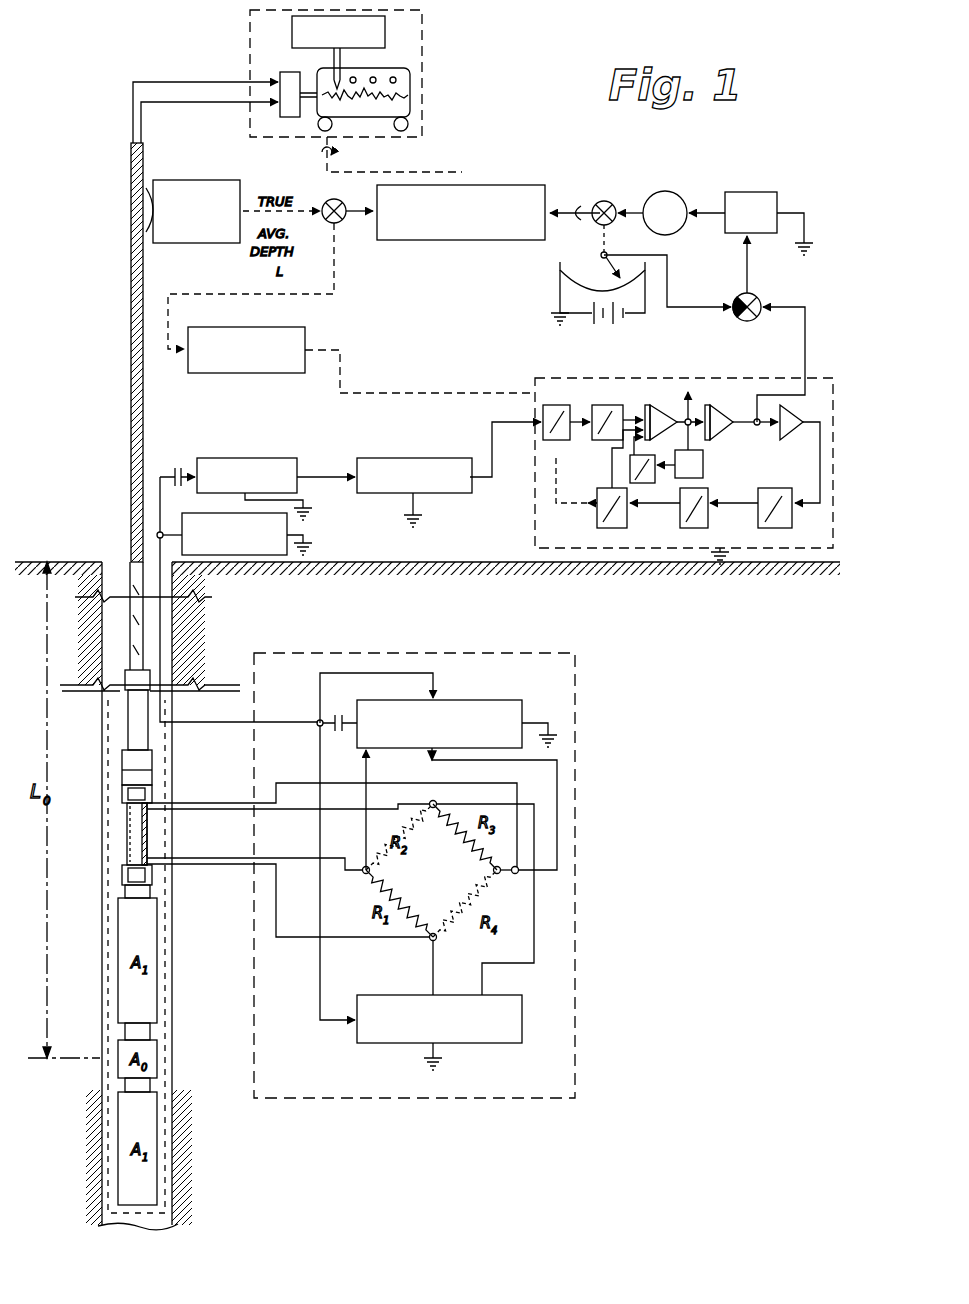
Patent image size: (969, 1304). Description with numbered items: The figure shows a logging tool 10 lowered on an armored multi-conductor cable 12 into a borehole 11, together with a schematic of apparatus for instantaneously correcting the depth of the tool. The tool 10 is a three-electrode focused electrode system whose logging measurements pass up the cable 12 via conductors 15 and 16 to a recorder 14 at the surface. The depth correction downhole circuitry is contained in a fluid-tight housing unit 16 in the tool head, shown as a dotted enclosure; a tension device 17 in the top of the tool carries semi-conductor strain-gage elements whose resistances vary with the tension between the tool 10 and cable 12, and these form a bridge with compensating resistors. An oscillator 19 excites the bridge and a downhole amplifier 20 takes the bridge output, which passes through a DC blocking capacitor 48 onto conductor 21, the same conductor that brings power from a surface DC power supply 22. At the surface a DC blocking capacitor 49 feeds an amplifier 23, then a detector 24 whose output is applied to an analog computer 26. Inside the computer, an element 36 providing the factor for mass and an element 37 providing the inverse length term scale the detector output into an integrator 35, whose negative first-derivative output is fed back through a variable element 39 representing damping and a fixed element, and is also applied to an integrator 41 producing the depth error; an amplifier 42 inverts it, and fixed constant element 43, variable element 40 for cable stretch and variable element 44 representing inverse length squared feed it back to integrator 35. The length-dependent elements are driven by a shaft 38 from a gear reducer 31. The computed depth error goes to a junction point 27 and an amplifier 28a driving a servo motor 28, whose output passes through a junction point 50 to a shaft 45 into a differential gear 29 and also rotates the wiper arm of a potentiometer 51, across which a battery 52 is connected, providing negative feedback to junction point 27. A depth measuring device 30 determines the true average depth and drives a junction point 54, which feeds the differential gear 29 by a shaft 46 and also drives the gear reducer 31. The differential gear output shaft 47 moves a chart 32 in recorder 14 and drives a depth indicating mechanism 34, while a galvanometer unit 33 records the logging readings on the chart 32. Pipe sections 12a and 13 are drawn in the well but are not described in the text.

The tool 10 is at (90, 1022).
The borehole 11 is at (102, 633).
The armored multi-conductor cable 12 is at (131, 463).
The lower pipe section 12a is at (127, 735).
The pipe string 13 is at (150, 657).
The recorder 14 is at (422, 52).
The conductor 15 is at (155, 106).
The fluid-tight housing unit 16 is at (162, 80).
The tension device 17 is at (104, 814).
The oscillator 19 is at (478, 1043).
The downhole amplifier 20 is at (462, 700).
The conductor 21 is at (165, 634).
The DC power supply 22 is at (215, 513).
The amplifier 23 is at (240, 458).
The detector 24 is at (414, 458).
The analog computer 26 is at (535, 505).
The junction point 27 is at (738, 316).
The servo motor 28 is at (670, 190).
The amplifier 28a is at (750, 192).
The differential gear 29 is at (460, 242).
The depth measuring device 30 is at (192, 180).
The gear reducer 31 is at (237, 327).
The chart 32 is at (410, 103).
The galvanometer unit 33 is at (280, 74).
The depth indicating mechanism 34 is at (385, 33).
The integrator 35 is at (654, 405).
The element 36 is at (609, 405).
The element 37 is at (556, 404).
The shaft 38 is at (556, 465).
The variable element 39 is at (703, 465).
The variable element 40 is at (680, 528).
The integrator 41 is at (716, 405).
The amplifier 42 is at (800, 412).
The fixed constant element 43 is at (758, 528).
The variable element 44 is at (597, 528).
The shaft 45 is at (574, 204).
The shaft 46 is at (351, 222).
The shaft 47 is at (462, 172).
The DC blocking capacitor 48 is at (338, 712).
The DC blocking capacitor 49 is at (175, 466).
The junction point 50 is at (604, 200).
The potentiometer 51 is at (583, 281).
The battery 52 is at (622, 323).
The junction point 54 is at (330, 200).